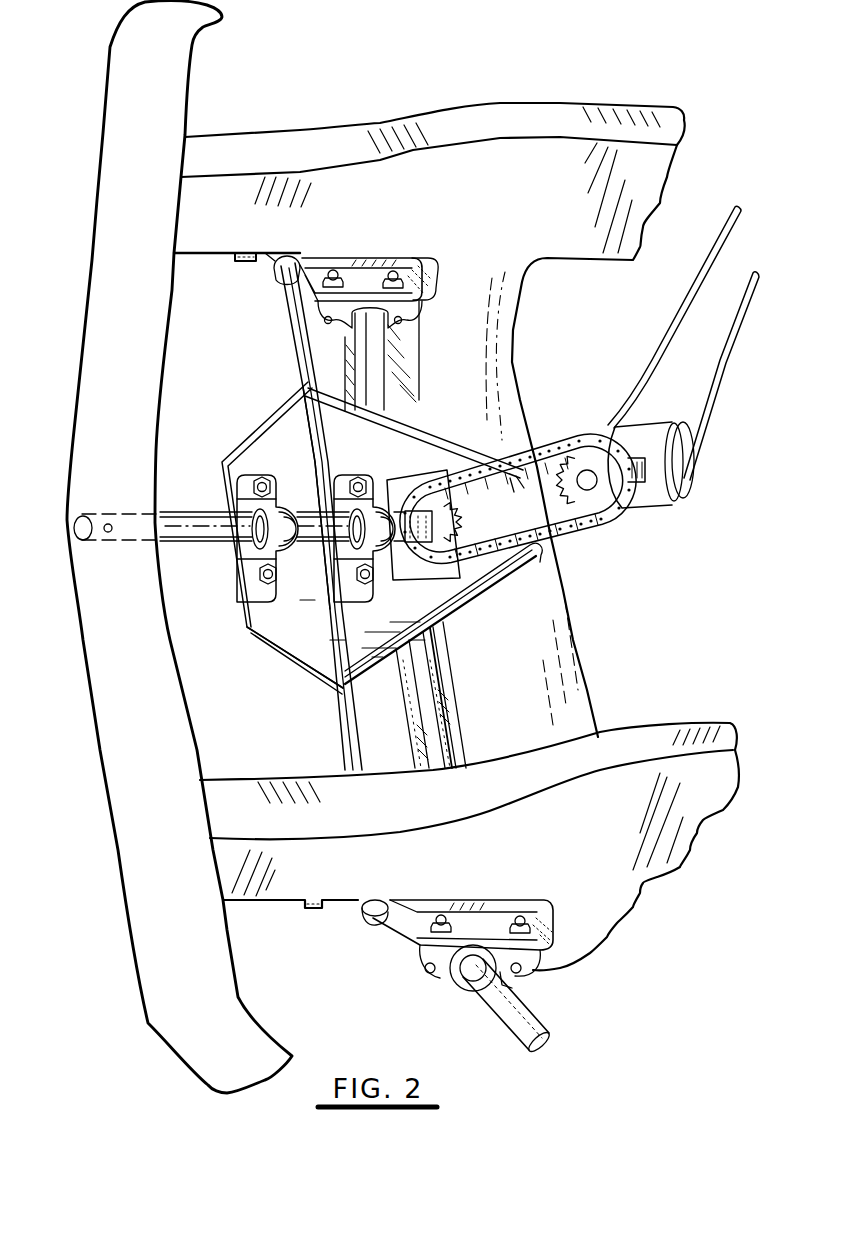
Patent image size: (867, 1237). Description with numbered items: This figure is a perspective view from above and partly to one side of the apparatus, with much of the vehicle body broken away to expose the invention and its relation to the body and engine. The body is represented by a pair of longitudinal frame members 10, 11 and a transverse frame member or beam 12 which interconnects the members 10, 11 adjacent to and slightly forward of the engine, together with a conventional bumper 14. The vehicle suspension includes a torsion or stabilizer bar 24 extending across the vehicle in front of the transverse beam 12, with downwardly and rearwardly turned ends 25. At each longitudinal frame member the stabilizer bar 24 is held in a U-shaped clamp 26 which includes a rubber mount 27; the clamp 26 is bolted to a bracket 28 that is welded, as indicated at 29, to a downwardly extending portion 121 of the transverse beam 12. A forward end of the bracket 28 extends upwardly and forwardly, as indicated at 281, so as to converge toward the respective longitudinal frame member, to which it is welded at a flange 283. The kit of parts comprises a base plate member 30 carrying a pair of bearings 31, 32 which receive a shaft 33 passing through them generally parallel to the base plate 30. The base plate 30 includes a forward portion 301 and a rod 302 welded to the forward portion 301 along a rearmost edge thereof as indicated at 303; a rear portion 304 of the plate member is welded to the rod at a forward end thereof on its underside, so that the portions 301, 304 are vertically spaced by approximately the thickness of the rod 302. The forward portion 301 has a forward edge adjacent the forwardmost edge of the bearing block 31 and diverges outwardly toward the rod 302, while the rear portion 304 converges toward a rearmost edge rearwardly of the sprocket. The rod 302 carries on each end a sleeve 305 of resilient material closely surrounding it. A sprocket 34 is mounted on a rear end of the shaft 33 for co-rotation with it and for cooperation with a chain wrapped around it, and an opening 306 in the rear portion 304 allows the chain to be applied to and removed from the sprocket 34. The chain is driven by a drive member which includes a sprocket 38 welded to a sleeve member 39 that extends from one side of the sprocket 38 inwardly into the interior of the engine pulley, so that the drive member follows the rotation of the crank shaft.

The longitudinal frame member 10 is at (530, 118).
The longitudinal frame member 11 is at (653, 737).
The transverse frame member or beam 12 is at (556, 668).
The bumper 14 is at (140, 793).
The downwardly extending portion of the transverse beam 121 is at (434, 268).
The torsion or stabilizer bar 24 is at (440, 730).
The turned ends of the stabilizer bar 25 is at (493, 1013).
The U-shaped clamp 26 is at (513, 978).
The rubber mount 27 is at (458, 962).
The bracket 28 is at (377, 282).
The forward end of the bracket 281 is at (388, 939).
The flange 283 is at (247, 264).
The weld 29 is at (412, 286).
The base plate member 30 is at (284, 667).
The forward portion of the base plate 301 is at (252, 450).
The rod 302 is at (292, 328).
The weld along rearmost edge 303 is at (302, 410).
The rear portion of the plate member 304 is at (420, 464).
The sleeve 305 is at (286, 254).
The opening 306 is at (445, 572).
The bearing 31 is at (250, 553).
The bearing 32 is at (350, 555).
The shaft 33 is at (200, 497).
The sprocket 34 is at (464, 510).
The sprocket of the drive member 38 is at (572, 520).
The sleeve member 39 is at (587, 476).